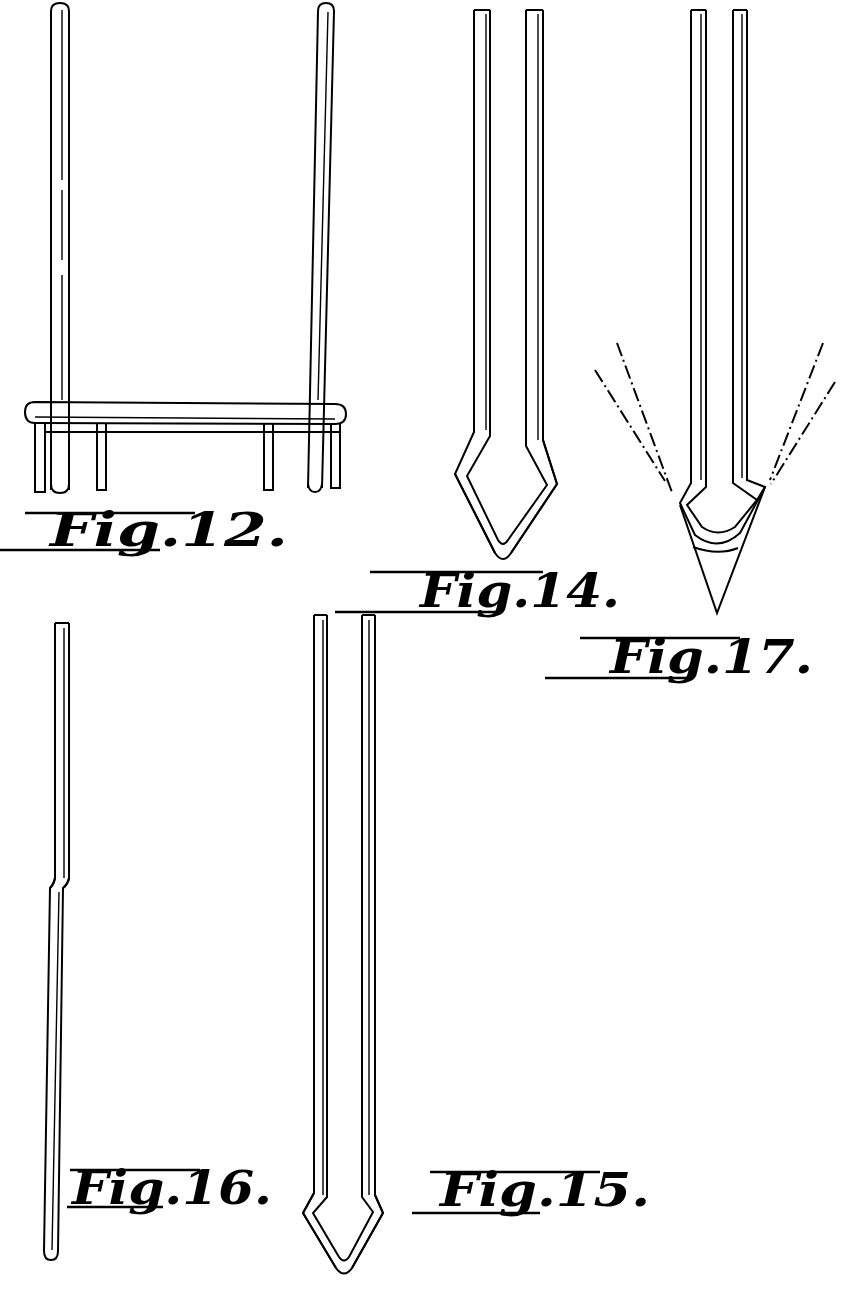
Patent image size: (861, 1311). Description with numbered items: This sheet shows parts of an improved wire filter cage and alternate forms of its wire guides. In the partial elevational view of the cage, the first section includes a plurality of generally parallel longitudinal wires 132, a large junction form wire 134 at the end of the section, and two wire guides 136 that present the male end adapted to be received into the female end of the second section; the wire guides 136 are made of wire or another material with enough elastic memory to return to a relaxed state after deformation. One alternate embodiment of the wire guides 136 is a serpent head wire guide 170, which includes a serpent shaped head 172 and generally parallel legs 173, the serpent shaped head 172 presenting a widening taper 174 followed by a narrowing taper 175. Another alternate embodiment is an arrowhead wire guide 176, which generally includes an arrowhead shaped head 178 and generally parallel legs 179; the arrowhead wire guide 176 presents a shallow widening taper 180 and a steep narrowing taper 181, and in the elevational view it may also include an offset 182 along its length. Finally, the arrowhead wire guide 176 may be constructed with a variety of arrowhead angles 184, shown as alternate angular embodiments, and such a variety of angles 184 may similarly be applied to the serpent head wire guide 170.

In FIG. 12, the longitudinal wires 132 is at (107, 455).
In FIG. 12, the large junction form wire 134 is at (346, 413).
In FIG. 12, the wire guides 136 is at (69, 231).
In FIG. 14, the serpent head wire guide 170 is at (540, 523).
In FIG. 14, the serpent shaped head 172 is at (455, 502).
In FIG. 14, the legs 173 is at (470, 418).
In FIG. 14, the widening taper 174 is at (552, 505).
In FIG. 14, the narrowing taper 175 is at (550, 448).
In FIG. 16, the arrowhead wire guide 176 is at (55, 767).
In FIG. 15, the arrowhead wire guide 176 is at (310, 950).
In FIG. 17, the arrowhead shaped head 178 is at (762, 513).
In FIG. 15, the arrowhead shaped head 178 is at (306, 1210).
In FIG. 17, the legs 179 is at (690, 165).
In FIG. 15, the legs 179 is at (314, 726).
In FIG. 15, the shallow widening taper 180 is at (313, 1242).
In FIG. 15, the steep narrowing taper 181 is at (312, 1188).
In FIG. 16, the offset 182 is at (63, 887).
In FIG. 17, the arrowhead angles 184 is at (708, 594).